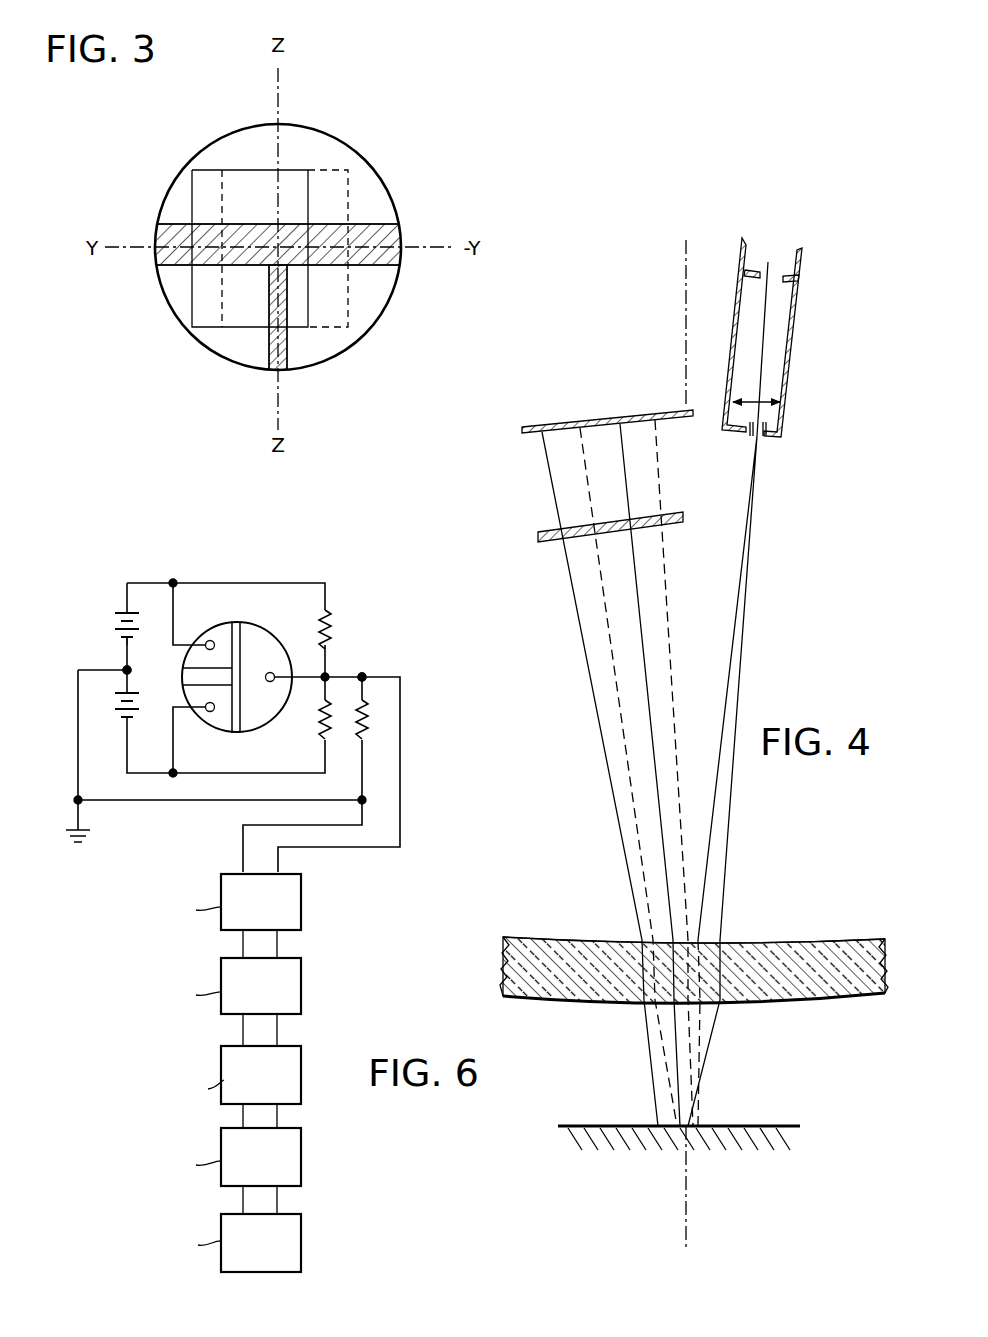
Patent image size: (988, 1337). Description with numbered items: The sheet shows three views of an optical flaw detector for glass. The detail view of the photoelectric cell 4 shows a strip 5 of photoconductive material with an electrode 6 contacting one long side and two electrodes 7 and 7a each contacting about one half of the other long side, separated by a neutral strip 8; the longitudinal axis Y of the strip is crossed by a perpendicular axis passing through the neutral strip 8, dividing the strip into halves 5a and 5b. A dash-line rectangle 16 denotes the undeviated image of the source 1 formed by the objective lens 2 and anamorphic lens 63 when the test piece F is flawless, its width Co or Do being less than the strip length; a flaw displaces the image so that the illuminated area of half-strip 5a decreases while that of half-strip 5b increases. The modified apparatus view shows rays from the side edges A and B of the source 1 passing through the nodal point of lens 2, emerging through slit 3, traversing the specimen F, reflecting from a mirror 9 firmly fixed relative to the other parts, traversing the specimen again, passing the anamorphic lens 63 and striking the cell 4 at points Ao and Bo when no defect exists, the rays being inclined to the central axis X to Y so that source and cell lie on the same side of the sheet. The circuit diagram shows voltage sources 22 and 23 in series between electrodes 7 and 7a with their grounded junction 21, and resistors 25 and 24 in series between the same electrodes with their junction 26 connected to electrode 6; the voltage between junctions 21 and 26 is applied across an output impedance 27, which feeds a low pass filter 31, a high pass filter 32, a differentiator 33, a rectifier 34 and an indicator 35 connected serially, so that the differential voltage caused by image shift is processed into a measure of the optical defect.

In FIG. 4, the source 1 is at (770, 270).
In FIG. 4, the objective lens 2 is at (762, 402).
In FIG. 4, the slit 3 is at (759, 440).
In FIG. 3, the photoelectric cell 4 is at (380, 171).
In FIG. 4, the photoelectric cell 4 is at (600, 414).
In FIG. 6, the photoelectric cell 4 is at (262, 630).
In FIG. 3, the strip of photoconductive material 5 is at (397, 255).
In FIG. 3, the half-strip 5a is at (325, 266).
In FIG. 6, the half-strip 5a is at (236, 624).
In FIG. 3, the half-strip 5b is at (250, 266).
In FIG. 6, the half-strip 5b is at (238, 733).
In FIG. 3, the electrode 6 is at (235, 150).
In FIG. 6, the electrode 6 is at (275, 660).
In FIG. 3, the electrode 7 is at (345, 340).
In FIG. 6, the electrode 7 is at (220, 640).
In FIG. 3, the electrode 7a is at (222, 350).
In FIG. 6, the electrode 7a is at (218, 720).
In FIG. 3, the neutral strip 8 is at (266, 360).
In FIG. 6, the neutral strip 8 is at (186, 676).
In FIG. 4, the mirror 9 is at (726, 1126).
In FIG. 3, the undeviated image 16 is at (345, 211).
In FIG. 6, the junction 21 is at (131, 670).
In FIG. 6, the voltage source 22 is at (118, 708).
In FIG. 6, the voltage source 23 is at (114, 628).
In FIG. 6, the resistor 24 is at (320, 722).
In FIG. 6, the resistor 25 is at (333, 630).
In FIG. 6, the junction 26 is at (364, 672).
In FIG. 6, the output impedance 27 is at (370, 728).
In FIG. 6, the low pass filter 31 is at (301, 912).
In FIG. 6, the high pass filter 32 is at (301, 1000).
In FIG. 6, the differentiator 33 is at (301, 1075).
In FIG. 6, the rectifier 34 is at (301, 1165).
In FIG. 6, the indicator 35 is at (301, 1246).
In FIG. 4, the anamorphic lens 63 is at (538, 537).
In FIG. 4, the side edge of the object A is at (797, 281).
In FIG. 4, the side edge of the object B is at (746, 275).
In FIG. 4, the test specimen F is at (812, 940).
In FIG. 4, the central axis X is at (686, 272).
In FIG. 4, the central axis Y is at (686, 1228).
In FIG. 3, the image point Ao is at (222, 203).
In FIG. 4, the image point Ao is at (581, 430).
In FIG. 3, the image point Bo is at (378, 315).
In FIG. 4, the image point Bo is at (657, 423).
In FIG. 3, the image width Co is at (292, 165).
In FIG. 3, the image width Do is at (293, 340).